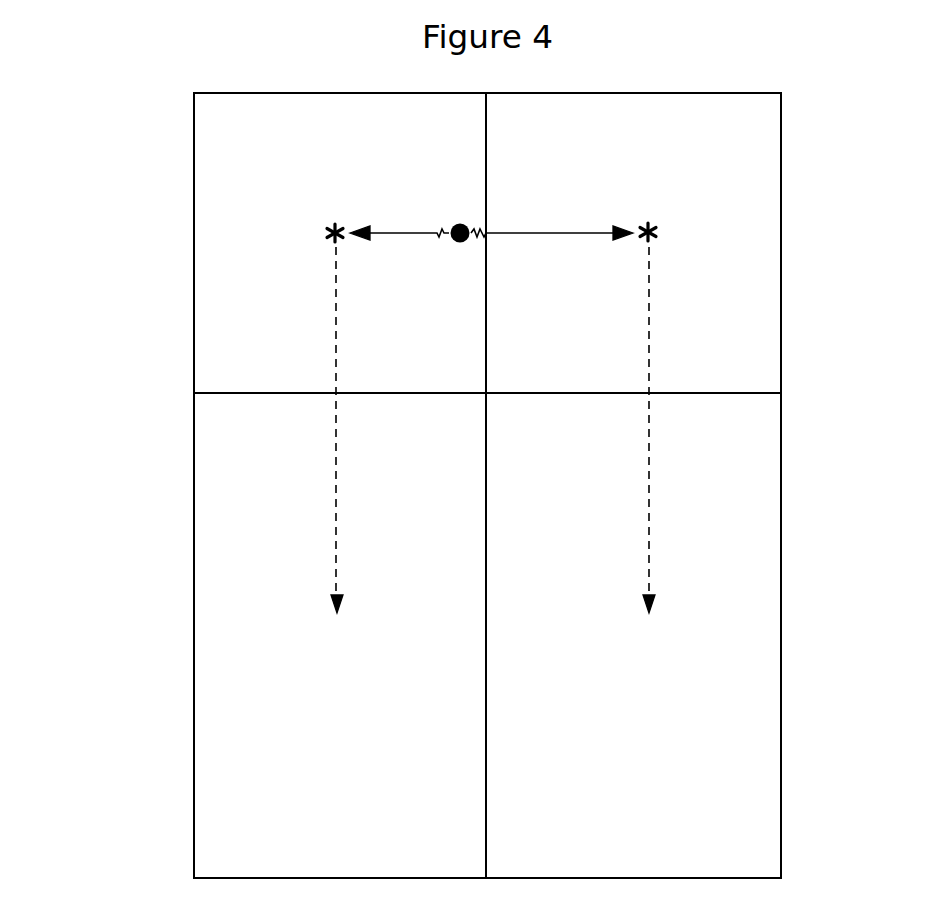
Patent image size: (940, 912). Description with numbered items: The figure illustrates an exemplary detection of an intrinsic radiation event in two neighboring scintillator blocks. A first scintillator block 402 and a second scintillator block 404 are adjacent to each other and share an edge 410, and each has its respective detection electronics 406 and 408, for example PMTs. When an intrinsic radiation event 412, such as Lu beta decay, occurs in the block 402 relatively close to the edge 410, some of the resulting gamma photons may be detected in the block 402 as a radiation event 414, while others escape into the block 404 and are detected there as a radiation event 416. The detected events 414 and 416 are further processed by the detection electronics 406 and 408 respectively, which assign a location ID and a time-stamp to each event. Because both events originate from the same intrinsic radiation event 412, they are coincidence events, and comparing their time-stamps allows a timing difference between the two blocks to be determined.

The first scintillator block 402 is at (230, 150).
The second scintillator block 404 is at (743, 166).
The detection electronics 406 is at (232, 822).
The detection electronics 408 is at (746, 840).
The edge 410 is at (486, 140).
The intrinsic radiation event 412 is at (445, 218).
The radiation event 414 is at (331, 219).
The radiation event 416 is at (643, 219).